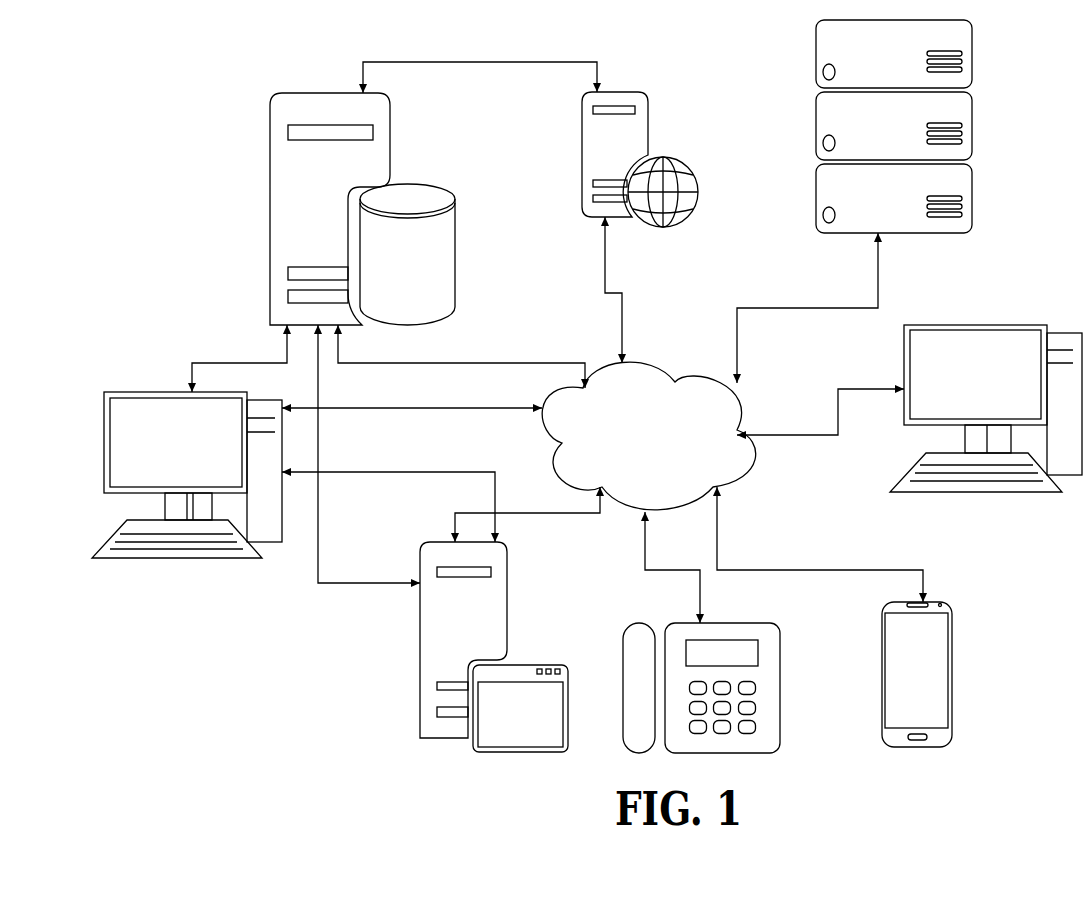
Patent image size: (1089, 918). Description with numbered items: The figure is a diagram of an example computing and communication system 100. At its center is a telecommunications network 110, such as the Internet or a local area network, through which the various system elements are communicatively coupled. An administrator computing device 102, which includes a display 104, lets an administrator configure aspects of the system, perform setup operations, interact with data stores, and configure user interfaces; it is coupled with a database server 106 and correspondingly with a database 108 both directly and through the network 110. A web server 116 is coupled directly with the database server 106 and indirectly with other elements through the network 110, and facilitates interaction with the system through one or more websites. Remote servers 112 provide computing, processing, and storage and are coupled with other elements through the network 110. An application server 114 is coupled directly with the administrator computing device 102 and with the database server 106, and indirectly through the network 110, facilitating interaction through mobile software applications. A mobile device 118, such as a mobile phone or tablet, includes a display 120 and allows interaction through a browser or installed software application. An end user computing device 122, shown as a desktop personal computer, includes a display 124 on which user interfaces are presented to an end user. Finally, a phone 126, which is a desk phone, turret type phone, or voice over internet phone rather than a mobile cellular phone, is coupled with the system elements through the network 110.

The computing and communication system 100 is at (230, 703).
The administrator computing device 102 is at (187, 509).
The display 104 is at (156, 456).
The database server 106 is at (273, 225).
The database 108 is at (458, 252).
The telecommunications network 110 is at (600, 365).
The remote servers 112 is at (815, 63).
The application server 114 is at (420, 652).
The web server 116 is at (648, 140).
The mobile device 118 is at (916, 693).
The display 120 is at (937, 732).
The end user computing device 122 is at (986, 442).
The display 124 is at (956, 391).
The phone 126 is at (780, 677).